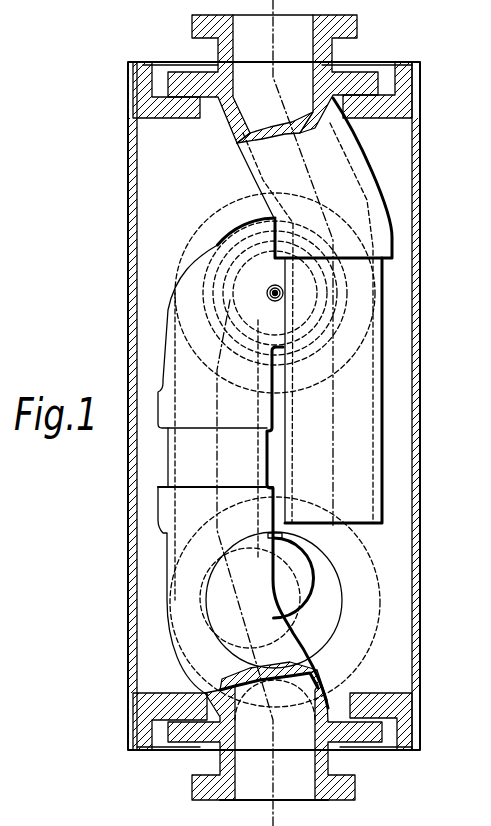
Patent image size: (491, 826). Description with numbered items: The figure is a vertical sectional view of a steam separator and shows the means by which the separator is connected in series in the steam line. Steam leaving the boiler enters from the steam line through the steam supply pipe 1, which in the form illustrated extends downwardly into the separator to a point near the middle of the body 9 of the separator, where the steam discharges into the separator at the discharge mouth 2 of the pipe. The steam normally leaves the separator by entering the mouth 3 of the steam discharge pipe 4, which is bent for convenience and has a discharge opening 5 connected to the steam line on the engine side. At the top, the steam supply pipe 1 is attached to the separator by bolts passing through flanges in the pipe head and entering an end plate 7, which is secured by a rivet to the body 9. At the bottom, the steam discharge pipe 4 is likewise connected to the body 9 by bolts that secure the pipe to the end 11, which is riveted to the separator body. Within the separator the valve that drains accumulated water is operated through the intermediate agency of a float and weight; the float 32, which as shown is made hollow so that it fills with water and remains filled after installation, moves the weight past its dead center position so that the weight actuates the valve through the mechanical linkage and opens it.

The steam supply pipe 1 is at (273, 263).
The discharge mouth 2 is at (350, 522).
The mouth 3 is at (266, 293).
The steam discharge pipe 4 is at (168, 458).
The discharge opening 5 is at (305, 767).
The end plate 7 is at (137, 103).
The body 9 is at (132, 147).
The end 11 is at (143, 707).
The float 32 is at (307, 567).